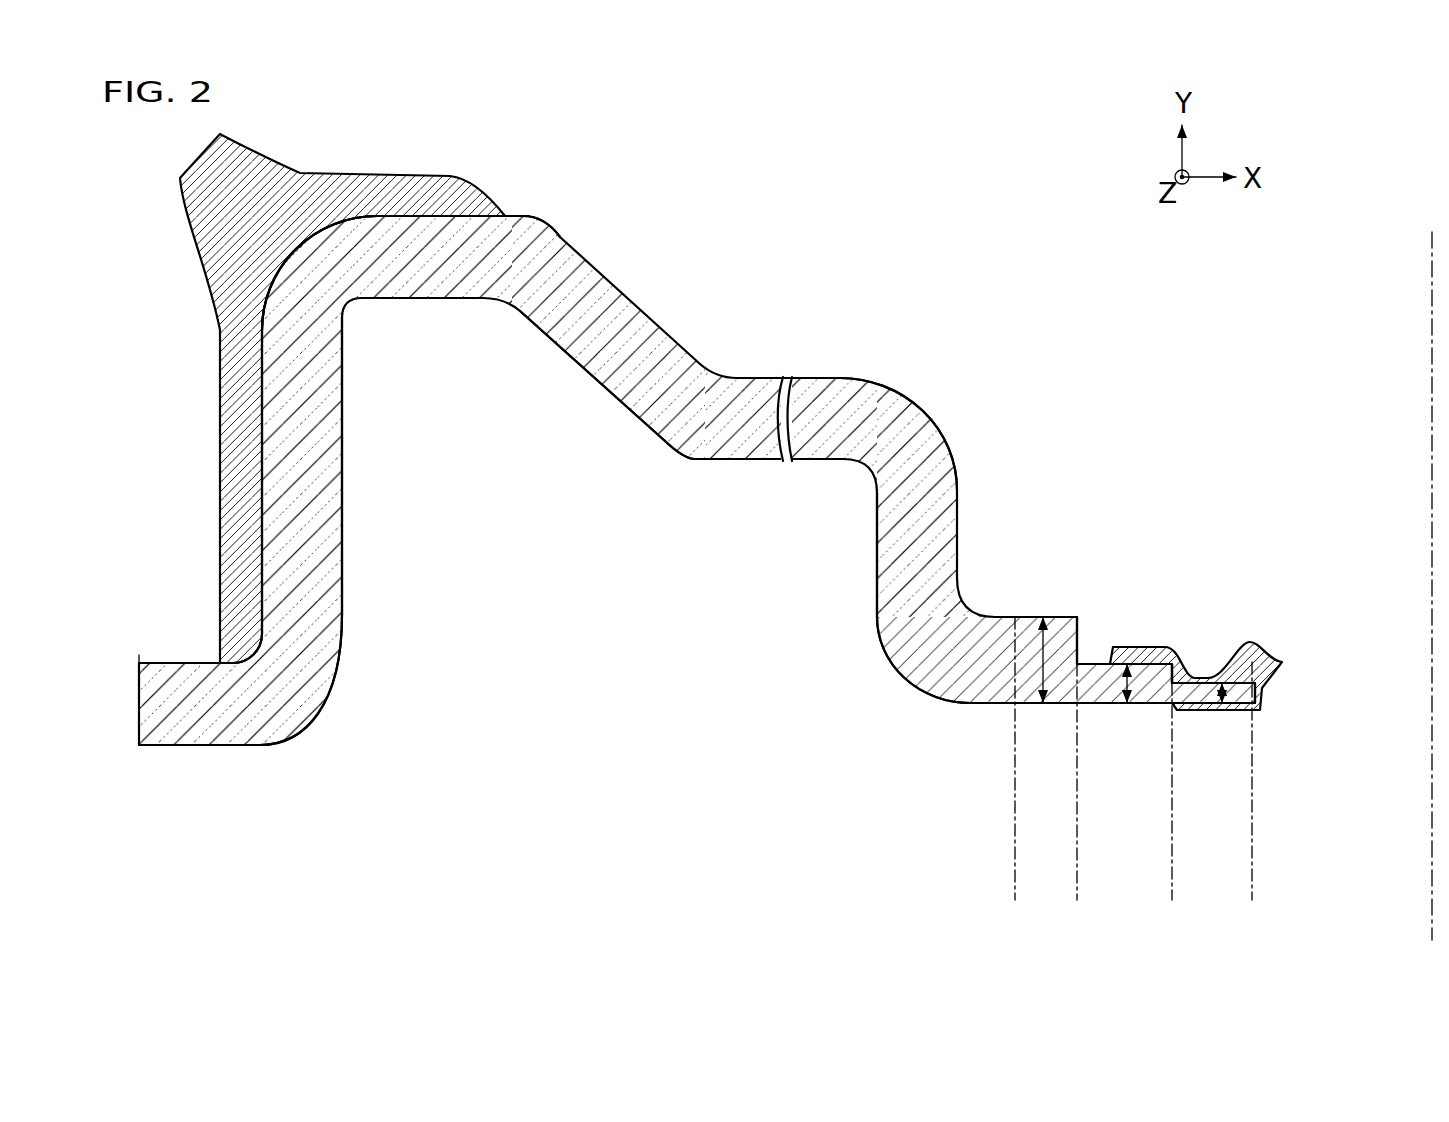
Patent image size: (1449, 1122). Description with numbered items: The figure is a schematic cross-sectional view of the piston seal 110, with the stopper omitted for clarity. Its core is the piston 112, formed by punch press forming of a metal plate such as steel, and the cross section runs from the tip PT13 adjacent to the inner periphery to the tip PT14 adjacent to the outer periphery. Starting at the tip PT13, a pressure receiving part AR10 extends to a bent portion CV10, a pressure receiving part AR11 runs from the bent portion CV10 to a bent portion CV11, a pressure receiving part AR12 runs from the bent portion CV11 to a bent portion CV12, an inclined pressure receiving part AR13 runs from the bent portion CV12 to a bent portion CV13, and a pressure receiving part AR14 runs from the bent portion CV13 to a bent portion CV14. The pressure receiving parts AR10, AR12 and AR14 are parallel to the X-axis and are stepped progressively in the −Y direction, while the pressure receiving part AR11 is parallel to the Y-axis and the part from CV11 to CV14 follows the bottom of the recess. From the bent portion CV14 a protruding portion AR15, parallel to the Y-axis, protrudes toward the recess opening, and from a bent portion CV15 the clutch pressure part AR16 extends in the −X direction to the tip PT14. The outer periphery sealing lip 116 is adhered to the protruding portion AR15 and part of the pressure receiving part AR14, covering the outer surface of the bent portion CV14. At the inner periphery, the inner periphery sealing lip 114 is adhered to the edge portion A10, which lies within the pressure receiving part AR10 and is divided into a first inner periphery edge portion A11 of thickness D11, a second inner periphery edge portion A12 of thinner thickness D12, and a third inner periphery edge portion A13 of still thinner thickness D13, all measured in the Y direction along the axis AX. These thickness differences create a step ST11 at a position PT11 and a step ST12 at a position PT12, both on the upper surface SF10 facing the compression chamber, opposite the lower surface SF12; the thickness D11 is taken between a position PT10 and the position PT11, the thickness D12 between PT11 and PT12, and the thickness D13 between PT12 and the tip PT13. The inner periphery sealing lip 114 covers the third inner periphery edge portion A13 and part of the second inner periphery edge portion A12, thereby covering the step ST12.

The piston seal 110 is at (1370, 295).
The piston 112 is at (346, 859).
The inner periphery sealing lip 114 is at (1283, 662).
The outer periphery sealing lip 116 is at (212, 162).
The axis AX is at (1432, 428).
The bent portion CV10 is at (899, 679).
The bent portion CV11 is at (923, 409).
The bent portion CV12 is at (683, 465).
The bent portion CV13 is at (546, 214).
The bent portion CV14 is at (282, 265).
The bent portion CV15 is at (328, 702).
The pressure receiving part AR10 is at (1253, 937).
The pressure receiving part AR11 is at (821, 470).
The pressure receiving part AR12 is at (933, 361).
The pressure receiving part AR13 is at (568, 403).
The pressure receiving part AR14 is at (543, 158).
The protruding portion AR15 is at (370, 312).
The clutch pressure part AR16 is at (348, 782).
The position PT10 is at (1015, 706).
The position PT11 is at (1077, 706).
The position PT12 is at (1172, 706).
The tip PT13 is at (1252, 713).
The tip PT14 is at (140, 660).
The surface SF10 is at (1068, 607).
The surface SF12 is at (1005, 714).
The step ST11 is at (1081, 637).
The step ST12 is at (1182, 678).
The thickness D11 is at (1043, 678).
The thickness D12 is at (1127, 687).
The thickness D13 is at (1215, 701).
The edge portion A10 is at (1252, 882).
The first inner periphery edge portion A11 is at (1077, 784).
The second inner periphery edge portion A12 is at (1172, 784).
The third inner periphery edge portion A13 is at (1252, 784).